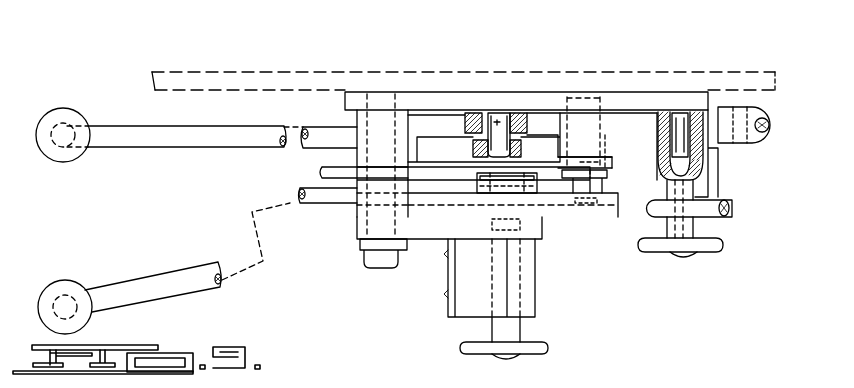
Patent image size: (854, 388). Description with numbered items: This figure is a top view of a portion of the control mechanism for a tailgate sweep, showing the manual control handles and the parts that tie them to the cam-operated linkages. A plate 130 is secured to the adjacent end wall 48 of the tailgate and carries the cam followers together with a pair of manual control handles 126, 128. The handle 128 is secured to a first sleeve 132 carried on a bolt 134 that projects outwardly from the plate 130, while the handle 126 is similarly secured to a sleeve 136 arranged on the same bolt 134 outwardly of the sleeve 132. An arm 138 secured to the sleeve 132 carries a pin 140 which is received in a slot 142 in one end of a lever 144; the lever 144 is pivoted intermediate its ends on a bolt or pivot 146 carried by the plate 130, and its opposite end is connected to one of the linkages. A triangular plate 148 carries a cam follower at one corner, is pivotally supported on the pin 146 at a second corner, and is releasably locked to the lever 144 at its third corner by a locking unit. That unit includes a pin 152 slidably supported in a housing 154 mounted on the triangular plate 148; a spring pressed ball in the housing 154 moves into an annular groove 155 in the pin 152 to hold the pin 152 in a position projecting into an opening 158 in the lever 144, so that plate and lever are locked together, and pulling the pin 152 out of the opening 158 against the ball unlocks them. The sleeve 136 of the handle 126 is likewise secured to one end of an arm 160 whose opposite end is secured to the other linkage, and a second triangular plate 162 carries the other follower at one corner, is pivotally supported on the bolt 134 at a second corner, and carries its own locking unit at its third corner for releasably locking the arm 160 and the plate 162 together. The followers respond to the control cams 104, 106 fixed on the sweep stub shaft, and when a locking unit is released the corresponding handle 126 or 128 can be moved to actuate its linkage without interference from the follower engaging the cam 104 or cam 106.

The end wall 48 is at (168, 80).
The control cam 104 is at (338, 205).
The control cam 106 is at (322, 170).
The manual control handle 126 is at (67, 287).
The manual control handle 128 is at (65, 110).
The plate 130 is at (407, 98).
The first sleeve 132 is at (357, 117).
The bolt 134 is at (368, 140).
The sleeve 136 is at (360, 212).
The arm 138 is at (432, 146).
The pin 140 is at (525, 115).
The slot 142 is at (475, 112).
The lever 144 is at (547, 118).
The pivot 146 is at (607, 130).
The triangular plate 148 is at (718, 152).
The pin 152 is at (697, 230).
The housing 154 is at (700, 187).
The annular groove 155 is at (675, 157).
The opening 158 is at (677, 117).
The arm 160 is at (435, 213).
The triangular plate 162 is at (535, 230).